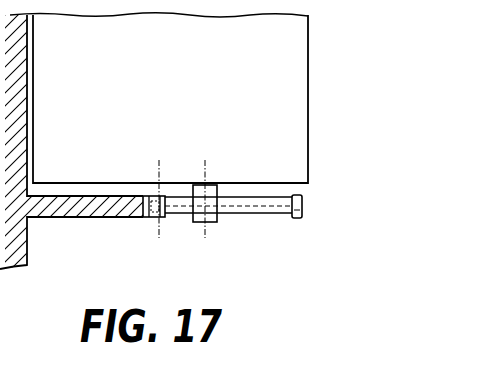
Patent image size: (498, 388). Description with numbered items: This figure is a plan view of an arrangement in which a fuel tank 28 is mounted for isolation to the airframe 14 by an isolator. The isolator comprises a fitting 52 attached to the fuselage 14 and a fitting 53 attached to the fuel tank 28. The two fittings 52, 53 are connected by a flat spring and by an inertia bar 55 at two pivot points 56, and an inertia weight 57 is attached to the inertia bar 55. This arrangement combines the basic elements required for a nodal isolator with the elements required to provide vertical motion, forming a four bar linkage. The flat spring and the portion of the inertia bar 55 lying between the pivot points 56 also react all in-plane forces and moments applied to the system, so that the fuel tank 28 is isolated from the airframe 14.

The airframe 14 is at (58, 218).
The fuel tank 28 is at (309, 69).
The fitting 52 is at (148, 218).
The fitting 53 is at (208, 223).
The inertia bar 55 is at (272, 213).
The pivot points 56 is at (205, 172).
The inertia weight 57 is at (302, 211).